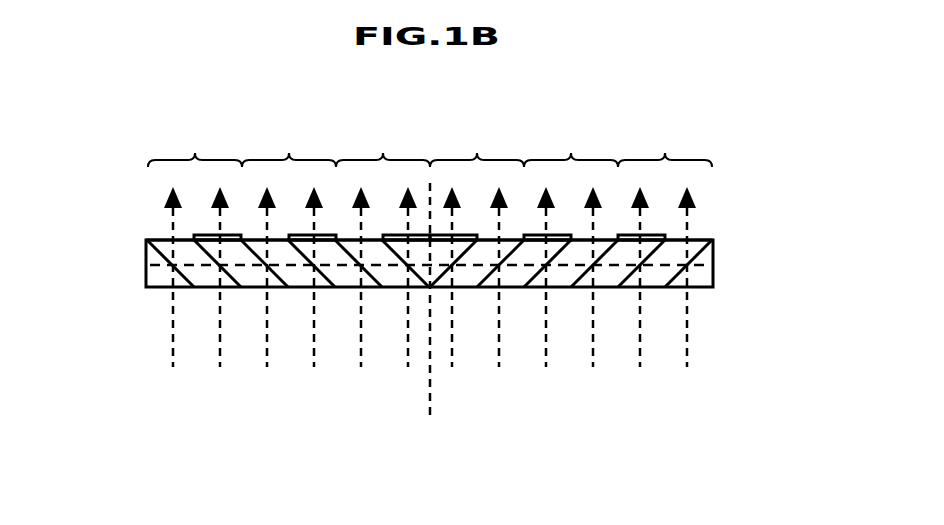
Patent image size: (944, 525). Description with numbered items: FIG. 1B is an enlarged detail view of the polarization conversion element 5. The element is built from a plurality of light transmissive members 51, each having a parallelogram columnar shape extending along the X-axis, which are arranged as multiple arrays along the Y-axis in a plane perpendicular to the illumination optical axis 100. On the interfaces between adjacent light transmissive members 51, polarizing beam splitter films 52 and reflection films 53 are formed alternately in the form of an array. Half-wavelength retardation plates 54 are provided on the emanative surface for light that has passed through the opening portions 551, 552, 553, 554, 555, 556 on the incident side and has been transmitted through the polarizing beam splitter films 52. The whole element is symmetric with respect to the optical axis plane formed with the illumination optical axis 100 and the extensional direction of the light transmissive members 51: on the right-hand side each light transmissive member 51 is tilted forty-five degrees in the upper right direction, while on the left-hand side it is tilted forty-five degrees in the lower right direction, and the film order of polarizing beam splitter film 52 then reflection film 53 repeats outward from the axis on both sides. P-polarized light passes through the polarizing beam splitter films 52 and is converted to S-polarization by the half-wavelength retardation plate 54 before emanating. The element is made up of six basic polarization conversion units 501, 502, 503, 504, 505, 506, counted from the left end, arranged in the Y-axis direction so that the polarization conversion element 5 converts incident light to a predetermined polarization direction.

The polarization conversion element 5 is at (722, 158).
The first polarization conversion unit 501 is at (195, 146).
The second polarization conversion unit 502 is at (289, 146).
The third polarization conversion unit 503 is at (383, 146).
The fourth polarization conversion unit 504 is at (477, 146).
The fifth polarization conversion unit 505 is at (571, 146).
The sixth polarization conversion unit 506 is at (665, 146).
The light transmissive member 51 is at (160, 242).
The polarizing beam splitter film 52 is at (178, 288).
The reflection film 53 is at (148, 265).
The half-wavelength retardation plate 54 is at (193, 238).
The first opening portion 551 is at (210, 293).
The second opening portion 552 is at (305, 293).
The third opening portion 553 is at (400, 293).
The fourth opening portion 554 is at (465, 292).
The fifth opening portion 555 is at (557, 292).
The sixth opening portion 556 is at (648, 292).
The illumination optical axis 100 is at (432, 373).